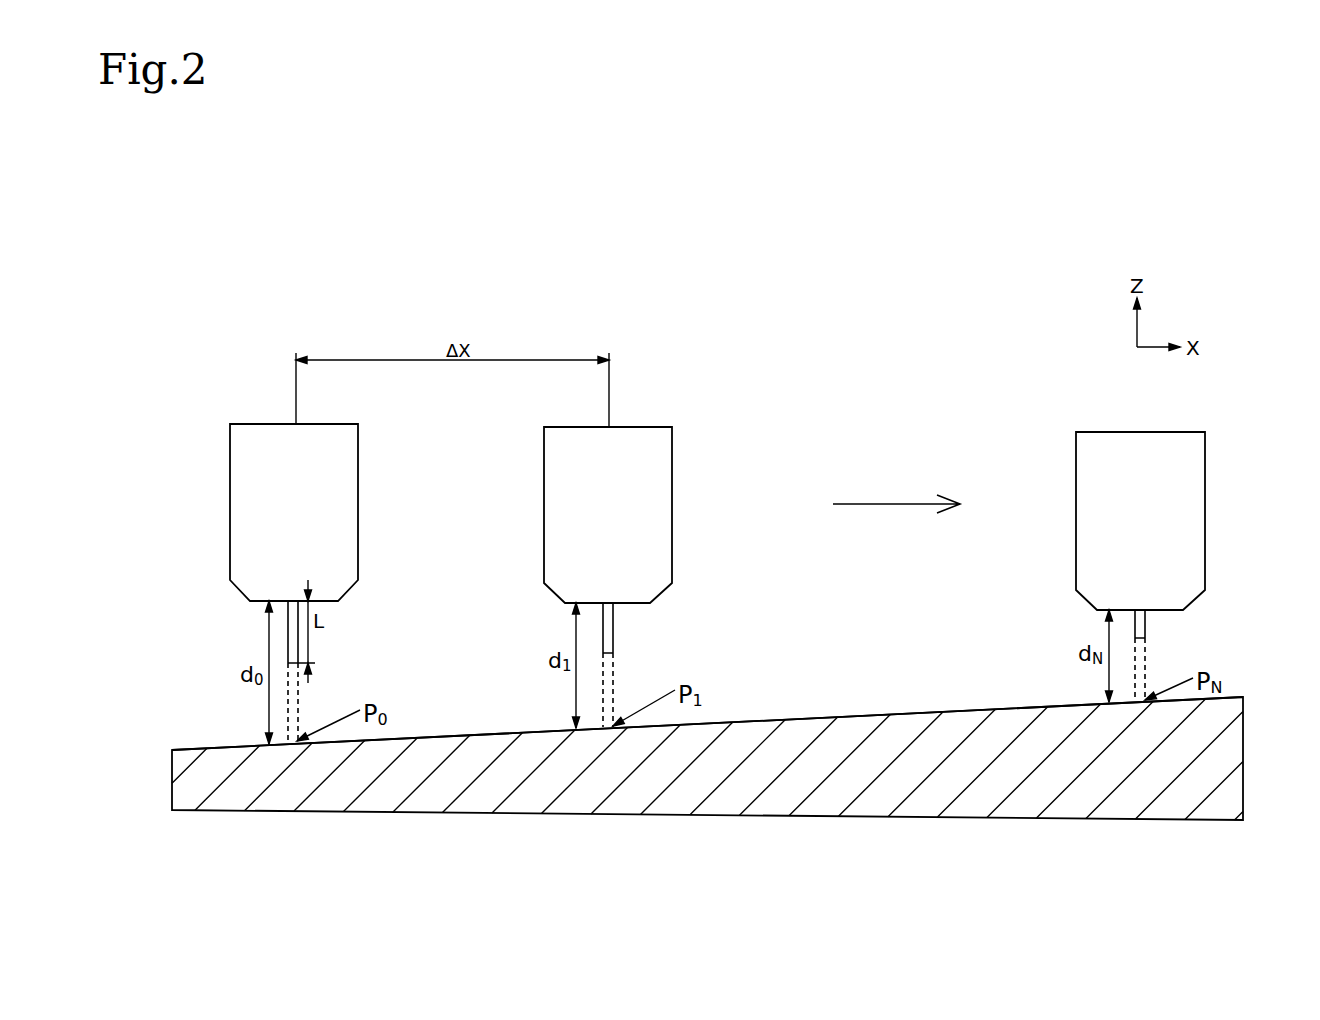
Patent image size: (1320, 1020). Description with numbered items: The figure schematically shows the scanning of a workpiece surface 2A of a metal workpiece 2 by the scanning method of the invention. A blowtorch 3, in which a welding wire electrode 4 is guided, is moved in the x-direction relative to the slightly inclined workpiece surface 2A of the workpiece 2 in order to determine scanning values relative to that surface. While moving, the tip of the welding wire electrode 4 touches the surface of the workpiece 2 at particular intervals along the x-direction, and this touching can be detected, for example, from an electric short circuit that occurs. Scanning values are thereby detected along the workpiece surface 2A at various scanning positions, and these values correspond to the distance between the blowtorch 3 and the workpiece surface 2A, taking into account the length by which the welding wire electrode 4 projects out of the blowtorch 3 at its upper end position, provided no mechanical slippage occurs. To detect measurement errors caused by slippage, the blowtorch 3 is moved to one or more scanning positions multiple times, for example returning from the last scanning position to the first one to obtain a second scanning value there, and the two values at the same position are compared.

The workpiece 2 is at (1243, 748).
The workpiece surface 2A is at (915, 712).
The blowtorch 3 is at (359, 478).
The welding wire electrode 4 is at (293, 610).